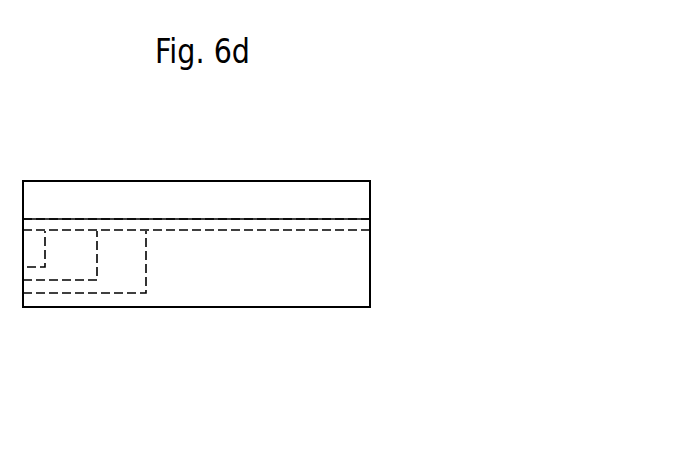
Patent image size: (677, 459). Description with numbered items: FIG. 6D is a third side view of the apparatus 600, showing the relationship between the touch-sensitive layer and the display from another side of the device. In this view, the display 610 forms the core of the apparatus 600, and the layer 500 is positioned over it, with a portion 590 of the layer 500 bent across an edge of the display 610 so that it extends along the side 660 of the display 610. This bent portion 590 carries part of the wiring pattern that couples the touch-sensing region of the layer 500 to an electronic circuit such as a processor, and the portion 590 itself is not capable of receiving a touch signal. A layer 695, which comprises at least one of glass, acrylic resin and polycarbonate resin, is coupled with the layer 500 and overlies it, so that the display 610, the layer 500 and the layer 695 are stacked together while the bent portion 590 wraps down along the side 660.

The apparatus 600 is at (423, 143).
The layer 695 is at (372, 199).
The layer 500 is at (372, 227).
The display 610 is at (372, 268).
The portion 590 is at (147, 275).
The side 660 is at (320, 278).